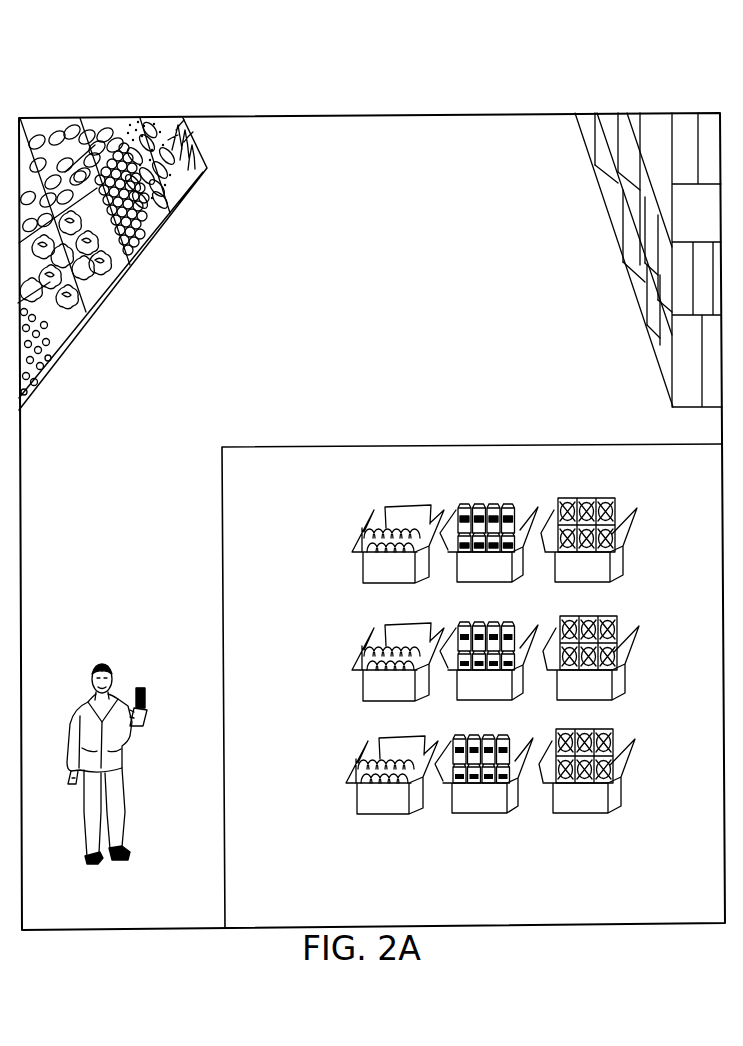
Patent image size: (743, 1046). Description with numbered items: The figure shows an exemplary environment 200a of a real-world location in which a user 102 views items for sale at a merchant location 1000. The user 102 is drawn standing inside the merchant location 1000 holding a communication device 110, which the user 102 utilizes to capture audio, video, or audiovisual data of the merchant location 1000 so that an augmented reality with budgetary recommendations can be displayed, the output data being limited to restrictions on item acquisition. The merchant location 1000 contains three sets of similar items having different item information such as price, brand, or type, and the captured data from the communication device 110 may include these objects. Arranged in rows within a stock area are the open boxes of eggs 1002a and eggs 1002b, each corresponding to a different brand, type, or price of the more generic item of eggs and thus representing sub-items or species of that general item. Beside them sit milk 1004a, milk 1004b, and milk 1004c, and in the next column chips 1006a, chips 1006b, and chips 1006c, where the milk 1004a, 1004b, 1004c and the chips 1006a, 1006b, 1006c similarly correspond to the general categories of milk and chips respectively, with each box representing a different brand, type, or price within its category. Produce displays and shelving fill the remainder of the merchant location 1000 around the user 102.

The environment 200a is at (596, 103).
The merchant location 1000 is at (495, 257).
The user 102 is at (113, 760).
The communication device 110 is at (148, 692).
The eggs 1002a is at (347, 536).
The eggs 1002b is at (347, 653).
The milk 1004a is at (482, 502).
The milk 1004b is at (482, 617).
The milk 1004c is at (509, 801).
The chips 1006a is at (596, 507).
The chips 1006b is at (608, 620).
The chips 1006c is at (612, 733).